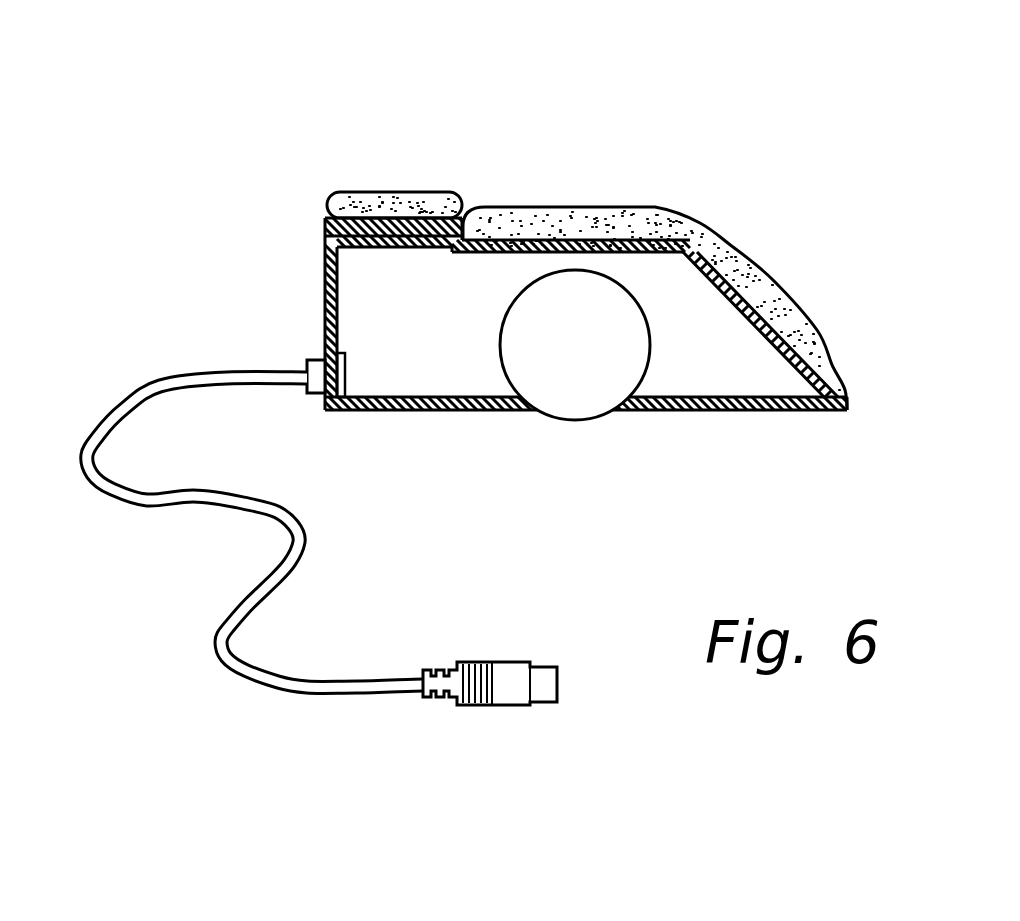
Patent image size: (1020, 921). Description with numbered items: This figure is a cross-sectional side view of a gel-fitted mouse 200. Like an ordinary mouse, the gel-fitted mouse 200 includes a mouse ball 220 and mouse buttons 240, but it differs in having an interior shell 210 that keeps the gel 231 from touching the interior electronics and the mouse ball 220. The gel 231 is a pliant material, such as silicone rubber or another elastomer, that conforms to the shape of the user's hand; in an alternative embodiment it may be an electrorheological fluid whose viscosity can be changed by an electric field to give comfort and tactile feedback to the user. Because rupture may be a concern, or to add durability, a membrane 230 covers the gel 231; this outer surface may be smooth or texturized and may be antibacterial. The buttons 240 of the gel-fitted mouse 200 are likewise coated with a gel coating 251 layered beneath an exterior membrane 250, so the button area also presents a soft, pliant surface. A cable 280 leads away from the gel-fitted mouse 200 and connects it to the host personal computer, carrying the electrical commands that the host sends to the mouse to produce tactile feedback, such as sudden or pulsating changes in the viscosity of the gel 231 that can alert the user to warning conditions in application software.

The gel-fitted mouse 200 is at (696, 138).
The interior shell 210 is at (722, 373).
The mouse ball 220 is at (555, 420).
The membrane 230 is at (770, 280).
The gel 231 is at (817, 332).
The mouse buttons 240 is at (325, 227).
The exterior membrane 250 is at (413, 192).
The gel coating 251 is at (367, 200).
The cable 280 is at (335, 690).